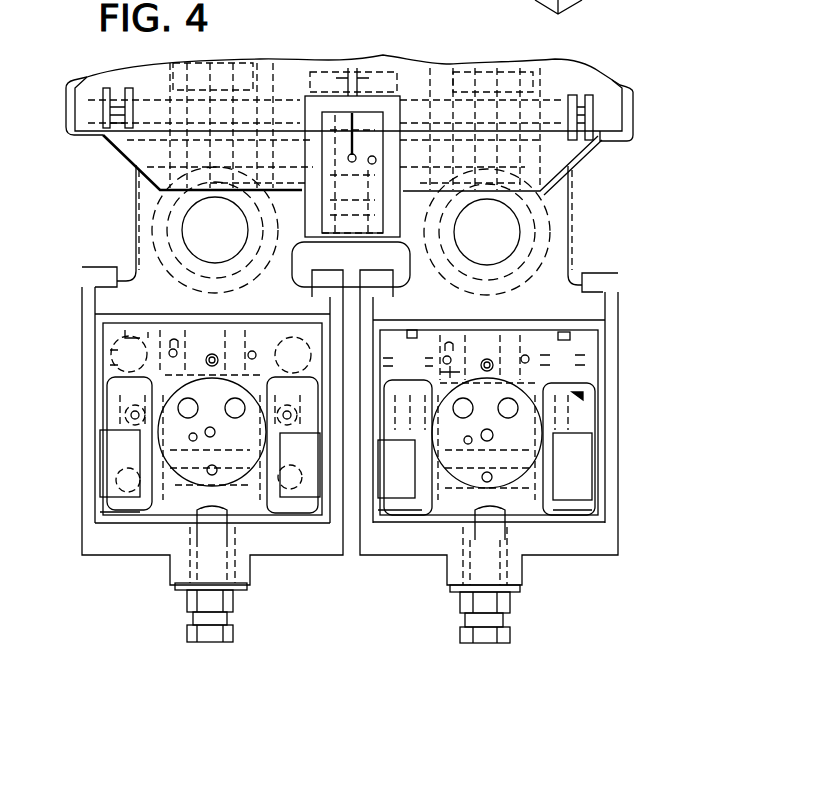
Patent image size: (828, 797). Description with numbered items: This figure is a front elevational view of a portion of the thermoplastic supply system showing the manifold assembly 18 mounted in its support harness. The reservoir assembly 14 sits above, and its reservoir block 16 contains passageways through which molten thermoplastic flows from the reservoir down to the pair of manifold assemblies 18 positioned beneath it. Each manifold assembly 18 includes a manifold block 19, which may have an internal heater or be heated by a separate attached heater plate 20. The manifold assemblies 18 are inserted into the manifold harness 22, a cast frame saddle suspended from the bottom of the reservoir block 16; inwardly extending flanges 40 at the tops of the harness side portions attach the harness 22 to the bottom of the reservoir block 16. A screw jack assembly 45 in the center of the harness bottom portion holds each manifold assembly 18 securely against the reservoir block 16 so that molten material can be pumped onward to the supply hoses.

The reservoir assembly 14 is at (612, 166).
The reservoir block 16 is at (553, 228).
The inwardly extending flanges 40 is at (95, 270).
The manifold assembly 18 is at (97, 380).
The manifold block 19 is at (107, 482).
The heater plate 20 is at (100, 515).
The manifold harness 22 is at (82, 437).
The screw jack assembly 45 is at (190, 608).